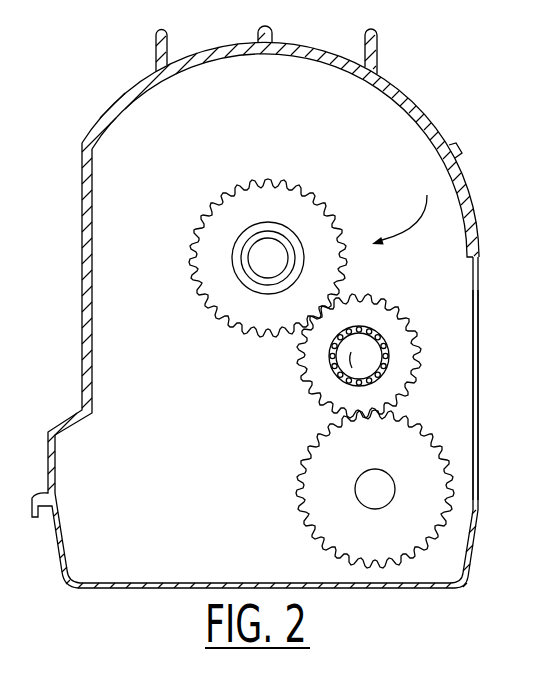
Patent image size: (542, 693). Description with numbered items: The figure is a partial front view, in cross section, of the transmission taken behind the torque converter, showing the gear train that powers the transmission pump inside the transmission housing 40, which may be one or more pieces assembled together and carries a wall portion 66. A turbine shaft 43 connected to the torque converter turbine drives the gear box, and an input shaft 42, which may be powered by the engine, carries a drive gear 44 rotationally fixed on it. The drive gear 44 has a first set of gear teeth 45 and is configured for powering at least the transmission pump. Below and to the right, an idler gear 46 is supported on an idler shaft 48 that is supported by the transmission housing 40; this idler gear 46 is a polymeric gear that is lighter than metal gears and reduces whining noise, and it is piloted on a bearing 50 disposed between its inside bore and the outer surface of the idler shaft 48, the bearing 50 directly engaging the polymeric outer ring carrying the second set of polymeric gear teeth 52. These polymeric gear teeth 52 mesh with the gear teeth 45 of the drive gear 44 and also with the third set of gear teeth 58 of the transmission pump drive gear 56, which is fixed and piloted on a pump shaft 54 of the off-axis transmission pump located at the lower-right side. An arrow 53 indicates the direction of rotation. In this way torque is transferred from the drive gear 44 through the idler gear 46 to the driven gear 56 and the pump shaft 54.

The transmission housing 40 is at (415, 110).
The input shaft 42 is at (303, 250).
The turbine shaft 43 is at (268, 266).
The drive gear 44 is at (276, 226).
The first set of gear teeth 45 is at (268, 180).
The idler gear 46 is at (344, 357).
The idler shaft 48 is at (359, 350).
The bearing 50 is at (330, 361).
The second set of polymeric gear teeth 52 is at (368, 294).
The rotation direction arrow 53 is at (401, 207).
The pump shaft 54 is at (345, 489).
The transmission pump drive gear 56 is at (317, 502).
The third set of gear teeth 58 is at (295, 488).
The housing wall 66 is at (472, 405).